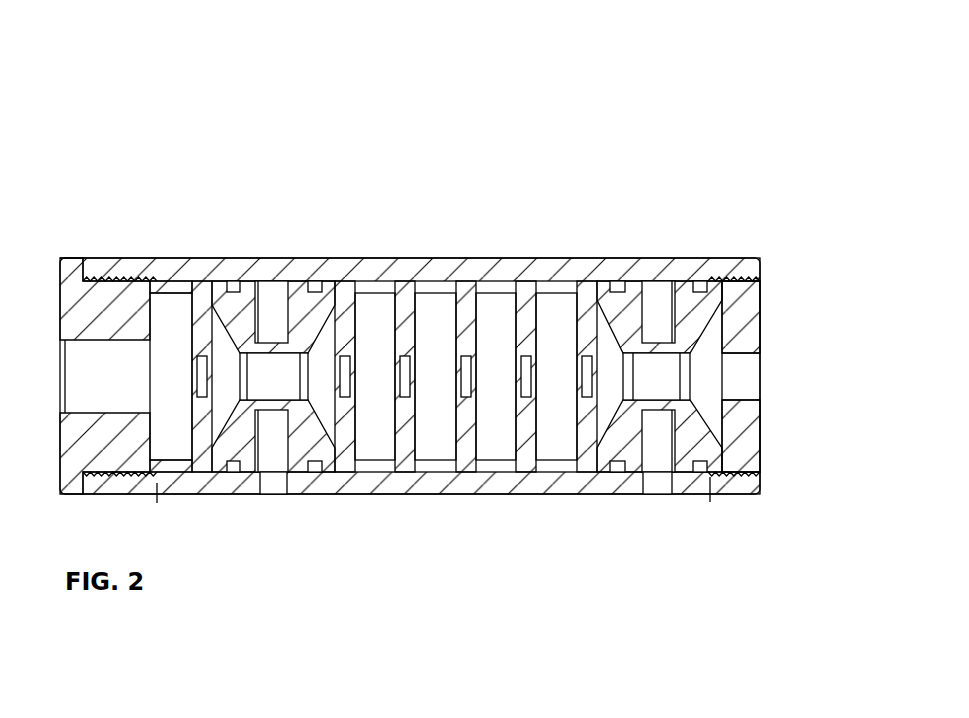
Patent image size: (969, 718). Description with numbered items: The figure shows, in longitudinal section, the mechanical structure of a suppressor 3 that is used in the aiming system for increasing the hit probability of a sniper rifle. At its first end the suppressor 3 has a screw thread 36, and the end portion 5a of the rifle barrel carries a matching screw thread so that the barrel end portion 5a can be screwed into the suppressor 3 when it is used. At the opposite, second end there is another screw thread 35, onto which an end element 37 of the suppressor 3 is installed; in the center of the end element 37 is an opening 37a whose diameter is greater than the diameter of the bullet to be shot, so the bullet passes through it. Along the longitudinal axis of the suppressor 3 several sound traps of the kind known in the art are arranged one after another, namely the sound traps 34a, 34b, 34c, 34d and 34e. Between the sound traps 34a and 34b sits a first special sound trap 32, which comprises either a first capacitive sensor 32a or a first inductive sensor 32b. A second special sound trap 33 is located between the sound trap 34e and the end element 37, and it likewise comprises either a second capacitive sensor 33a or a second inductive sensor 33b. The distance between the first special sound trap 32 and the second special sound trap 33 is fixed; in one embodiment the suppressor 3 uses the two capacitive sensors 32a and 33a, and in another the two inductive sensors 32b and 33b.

The suppressor 3 is at (605, 105).
The end portion of the barrel 5a is at (72, 248).
The special sound trap 32 is at (277, 375).
The first capacitive sensor 32a is at (270, 452).
The first inductive sensor 32b is at (273, 483).
The second special sound trap 33 is at (668, 373).
The second capacitive sensor 33a is at (655, 449).
The second inductive sensor 33b is at (657, 483).
The sound trap 34a is at (170, 257).
The sound trap 34b is at (375, 257).
The sound trap 34c is at (432, 257).
The sound trap 34d is at (488, 257).
The sound trap 34e is at (550, 257).
The screw thread 35 is at (740, 257).
The screw thread 36 is at (118, 257).
The end element 37 is at (762, 290).
The opening 37a is at (762, 372).